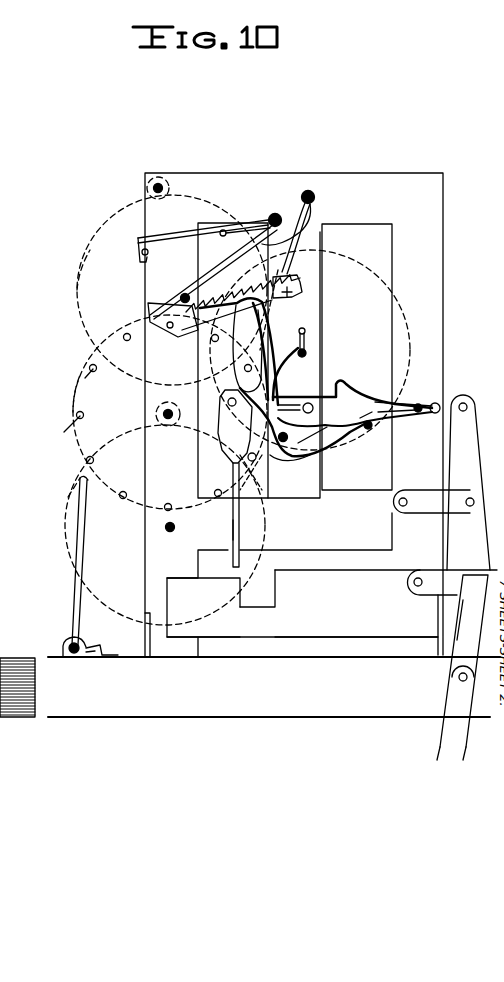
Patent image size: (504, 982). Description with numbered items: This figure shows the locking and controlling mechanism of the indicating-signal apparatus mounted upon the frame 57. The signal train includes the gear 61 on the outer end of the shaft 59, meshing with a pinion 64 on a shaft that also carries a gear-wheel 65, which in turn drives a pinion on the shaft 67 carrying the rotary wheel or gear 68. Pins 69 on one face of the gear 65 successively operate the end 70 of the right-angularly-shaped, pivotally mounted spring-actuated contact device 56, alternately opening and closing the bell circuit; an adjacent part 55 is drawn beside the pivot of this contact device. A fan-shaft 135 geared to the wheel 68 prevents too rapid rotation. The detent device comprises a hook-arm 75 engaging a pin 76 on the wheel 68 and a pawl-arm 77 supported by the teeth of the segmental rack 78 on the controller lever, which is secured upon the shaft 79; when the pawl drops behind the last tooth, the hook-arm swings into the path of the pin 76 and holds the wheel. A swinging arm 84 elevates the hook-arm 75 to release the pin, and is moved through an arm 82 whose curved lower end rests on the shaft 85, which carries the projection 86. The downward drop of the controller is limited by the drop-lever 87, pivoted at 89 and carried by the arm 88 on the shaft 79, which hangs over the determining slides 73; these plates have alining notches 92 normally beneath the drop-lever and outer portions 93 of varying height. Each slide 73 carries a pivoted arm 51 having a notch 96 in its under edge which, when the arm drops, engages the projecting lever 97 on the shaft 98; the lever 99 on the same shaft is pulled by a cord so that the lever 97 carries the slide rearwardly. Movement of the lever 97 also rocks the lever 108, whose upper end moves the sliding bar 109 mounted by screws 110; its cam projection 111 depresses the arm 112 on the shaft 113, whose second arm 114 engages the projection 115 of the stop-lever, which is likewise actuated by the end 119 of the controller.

The arm 51 is at (430, 597).
The latch 55 is at (97, 650).
The spring-actuated contact device 56 is at (84, 658).
The frame 57 is at (294, 403).
The shaft 59 is at (170, 532).
The gear 61 is at (68, 497).
The pinion 64 is at (160, 414).
The gear-wheel 65 is at (69, 404).
The shaft 67 is at (165, 303).
The rotary wheel or gear 68 is at (84, 266).
The projections or pins 69 is at (77, 418).
The end of contact device 70 is at (87, 541).
The determining elements or slides 73 is at (386, 612).
The hook-arm 75 is at (175, 236).
The pin 76 is at (148, 251).
The pawl-arm 77 is at (226, 262).
The segmental rack 78 is at (303, 291).
The shaft or pivot 79 is at (283, 443).
The arm 82 is at (284, 258).
The swinging arm 84 is at (270, 257).
The shaft 85 is at (307, 353).
The projection or arm 86 is at (307, 334).
The drop-lever 87 is at (239, 531).
The arm 88 is at (230, 450).
The pivot 89 is at (237, 426).
The alining notches or recesses 92 is at (278, 574).
The outer portions of slides 93 is at (203, 607).
The notch or recess 96 is at (480, 585).
The projecting lever 97 is at (460, 645).
The shaft 98 is at (463, 682).
The lever 99 is at (442, 738).
The lever 108 is at (440, 453).
The sliding bar 109 is at (447, 392).
The screws 110 is at (308, 400).
The cam or trip projection 111 is at (348, 395).
The arm 112 is at (400, 402).
The shaft 113 is at (419, 413).
The second arm 114 is at (370, 430).
The projection 115 is at (368, 430).
The end of controller lever 119 is at (322, 440).
The fan-shaft 135 is at (162, 182).